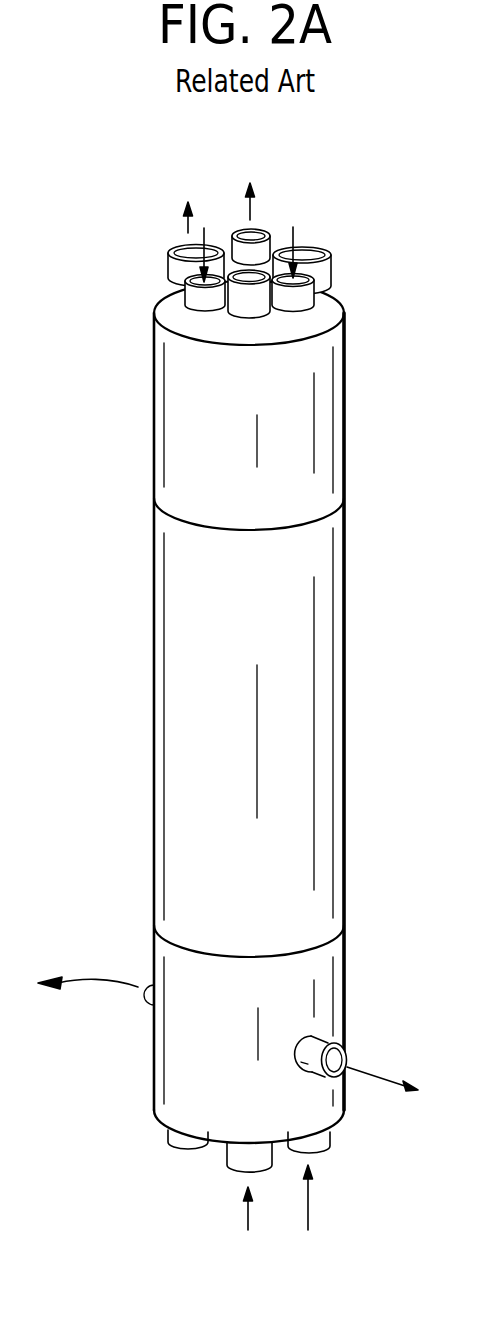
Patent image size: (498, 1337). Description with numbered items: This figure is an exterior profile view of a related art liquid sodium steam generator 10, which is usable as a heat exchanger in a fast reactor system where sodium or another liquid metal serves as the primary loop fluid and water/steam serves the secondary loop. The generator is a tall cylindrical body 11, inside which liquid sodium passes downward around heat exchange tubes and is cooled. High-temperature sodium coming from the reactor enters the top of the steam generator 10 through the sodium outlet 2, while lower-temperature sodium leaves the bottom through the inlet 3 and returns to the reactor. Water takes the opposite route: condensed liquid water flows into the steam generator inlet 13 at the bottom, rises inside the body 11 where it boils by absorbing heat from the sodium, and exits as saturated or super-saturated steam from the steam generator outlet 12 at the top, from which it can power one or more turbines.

The steam generator 10 is at (52, 710).
The body 11 is at (175, 552).
The steam generator outlet 12 is at (250, 250).
The sodium outlet 2 is at (245, 303).
The inlet 3 is at (320, 1046).
The steam generator inlet 13 is at (180, 1147).